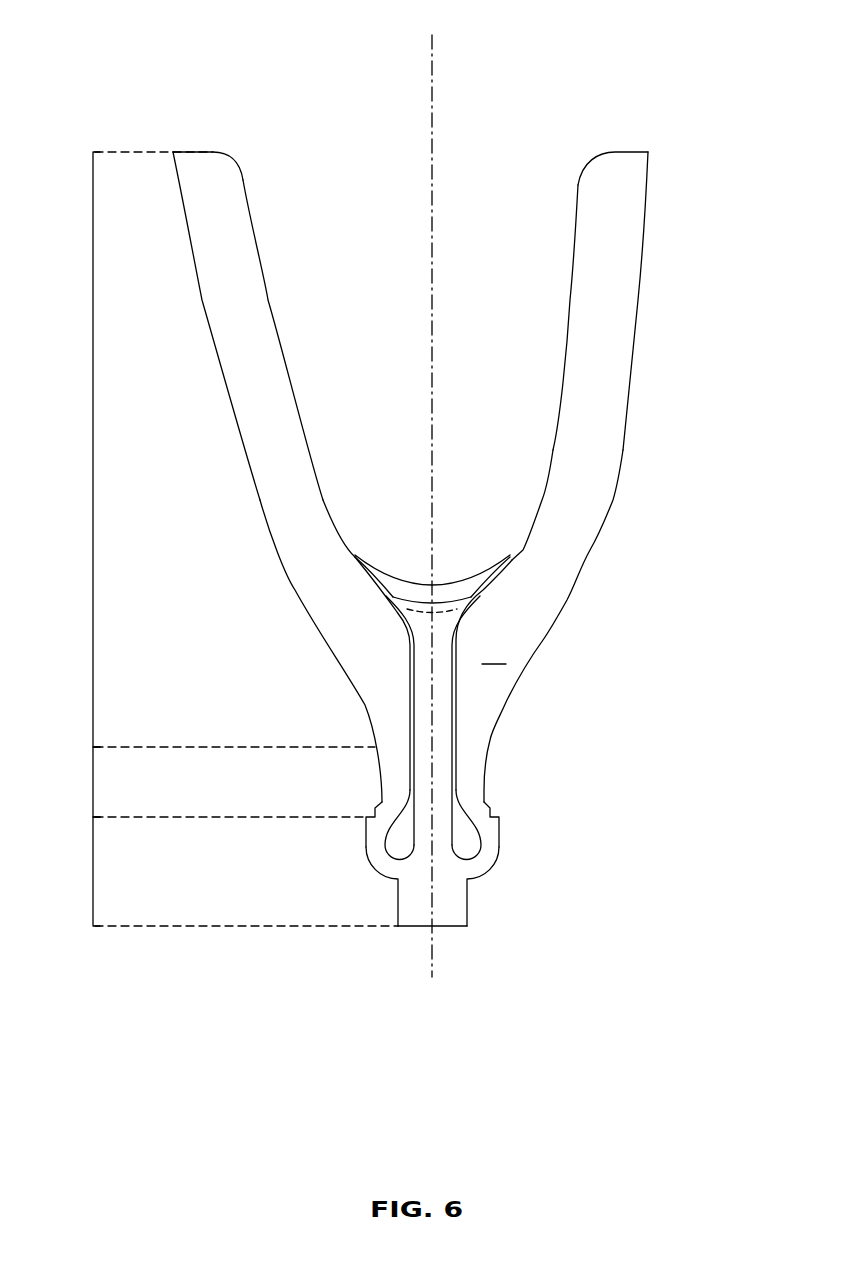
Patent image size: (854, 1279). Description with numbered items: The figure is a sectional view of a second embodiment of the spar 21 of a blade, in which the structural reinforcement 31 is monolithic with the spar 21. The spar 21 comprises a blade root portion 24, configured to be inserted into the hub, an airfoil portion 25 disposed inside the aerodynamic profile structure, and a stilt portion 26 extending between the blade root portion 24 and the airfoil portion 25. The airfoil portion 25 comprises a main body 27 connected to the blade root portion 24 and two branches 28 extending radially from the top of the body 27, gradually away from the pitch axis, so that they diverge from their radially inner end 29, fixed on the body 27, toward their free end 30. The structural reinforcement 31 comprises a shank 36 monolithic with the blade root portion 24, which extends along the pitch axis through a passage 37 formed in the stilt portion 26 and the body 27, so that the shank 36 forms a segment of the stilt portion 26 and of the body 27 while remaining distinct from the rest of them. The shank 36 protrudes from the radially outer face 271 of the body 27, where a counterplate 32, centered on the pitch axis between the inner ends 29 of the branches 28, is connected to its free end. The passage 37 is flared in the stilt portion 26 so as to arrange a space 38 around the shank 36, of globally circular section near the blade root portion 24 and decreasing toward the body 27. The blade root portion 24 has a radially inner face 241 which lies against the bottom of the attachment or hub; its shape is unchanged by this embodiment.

The spar 21 is at (527, 93).
The blade root portion 24 is at (93, 873).
The airfoil portion 25 is at (93, 452).
The stilt portion 26 is at (93, 782).
The main body 27 is at (433, 673).
The radially outer face 271 is at (494, 597).
The branches 28 is at (240, 370).
The radially inner end 29 is at (303, 558).
The free end 30 is at (203, 142).
The structural reinforcement 31 is at (436, 519).
The counterplate 32 is at (387, 572).
The shank 36 is at (447, 758).
The passage 37 is at (466, 716).
The space 38 is at (402, 841).
The radially inner face 241 is at (408, 938).